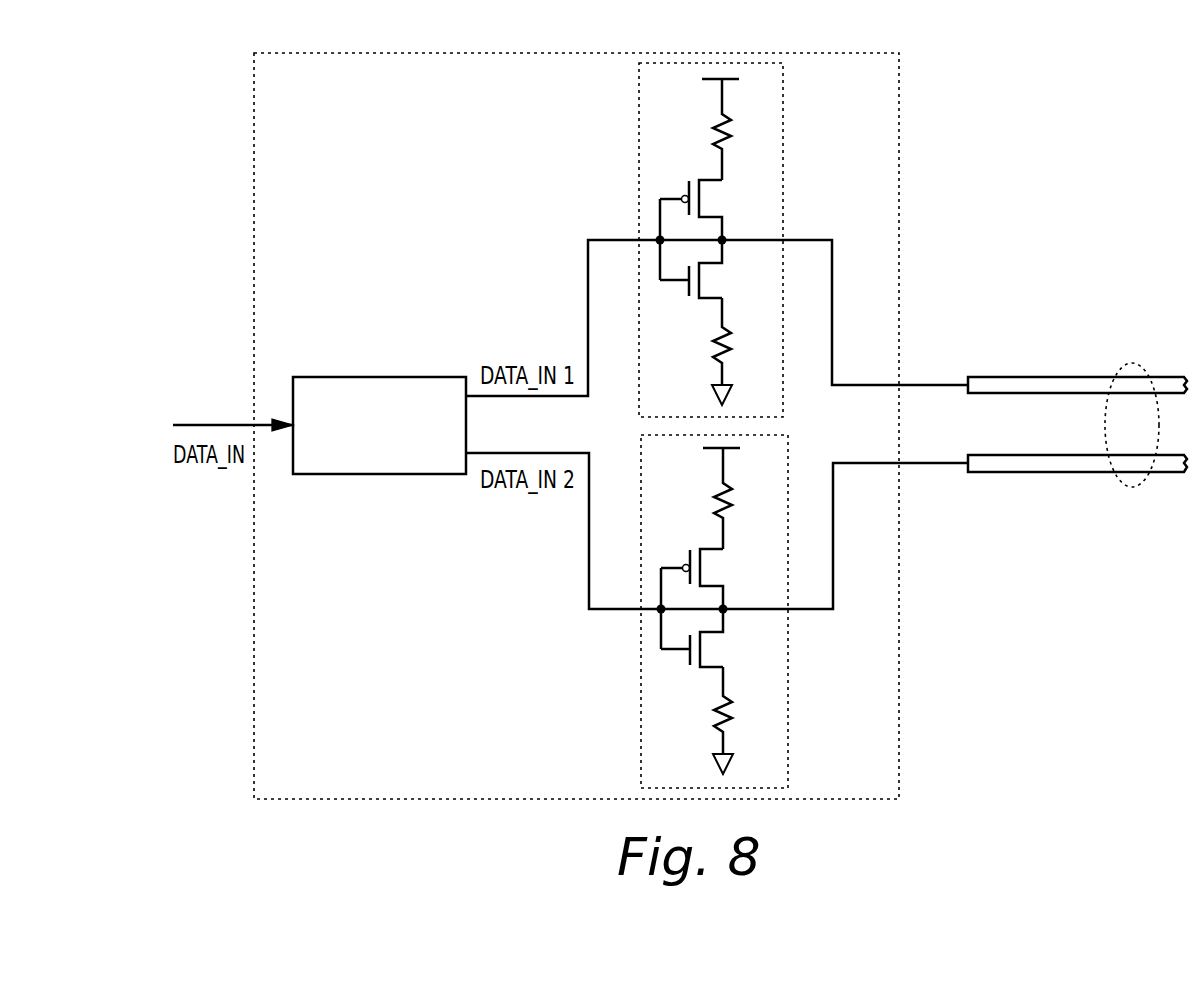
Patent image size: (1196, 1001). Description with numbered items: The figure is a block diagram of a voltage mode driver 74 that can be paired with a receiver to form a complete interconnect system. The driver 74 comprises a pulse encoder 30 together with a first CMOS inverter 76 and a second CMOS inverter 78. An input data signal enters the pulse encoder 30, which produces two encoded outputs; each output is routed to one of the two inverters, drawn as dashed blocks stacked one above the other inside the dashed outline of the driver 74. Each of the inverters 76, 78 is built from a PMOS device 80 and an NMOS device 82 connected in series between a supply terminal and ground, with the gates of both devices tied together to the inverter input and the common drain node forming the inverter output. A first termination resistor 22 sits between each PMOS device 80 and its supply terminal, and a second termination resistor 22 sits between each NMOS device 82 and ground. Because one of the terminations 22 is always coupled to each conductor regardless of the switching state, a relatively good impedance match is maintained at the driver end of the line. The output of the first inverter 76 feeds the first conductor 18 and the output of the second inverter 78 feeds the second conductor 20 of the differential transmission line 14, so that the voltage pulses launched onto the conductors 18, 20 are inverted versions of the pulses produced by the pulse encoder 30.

The differential transmission line 14 is at (1132, 366).
The first conductor 18 is at (1040, 377).
The second conductor 20 is at (1043, 473).
The termination resistor 22 is at (729, 149).
The pulse encoder 30 is at (378, 376).
The voltage mode driver 74 is at (574, 52).
The first CMOS inverter 76 is at (638, 130).
The second CMOS inverter 78 is at (640, 729).
The PMOS device 80 is at (711, 213).
The NMOS device 82 is at (711, 296).